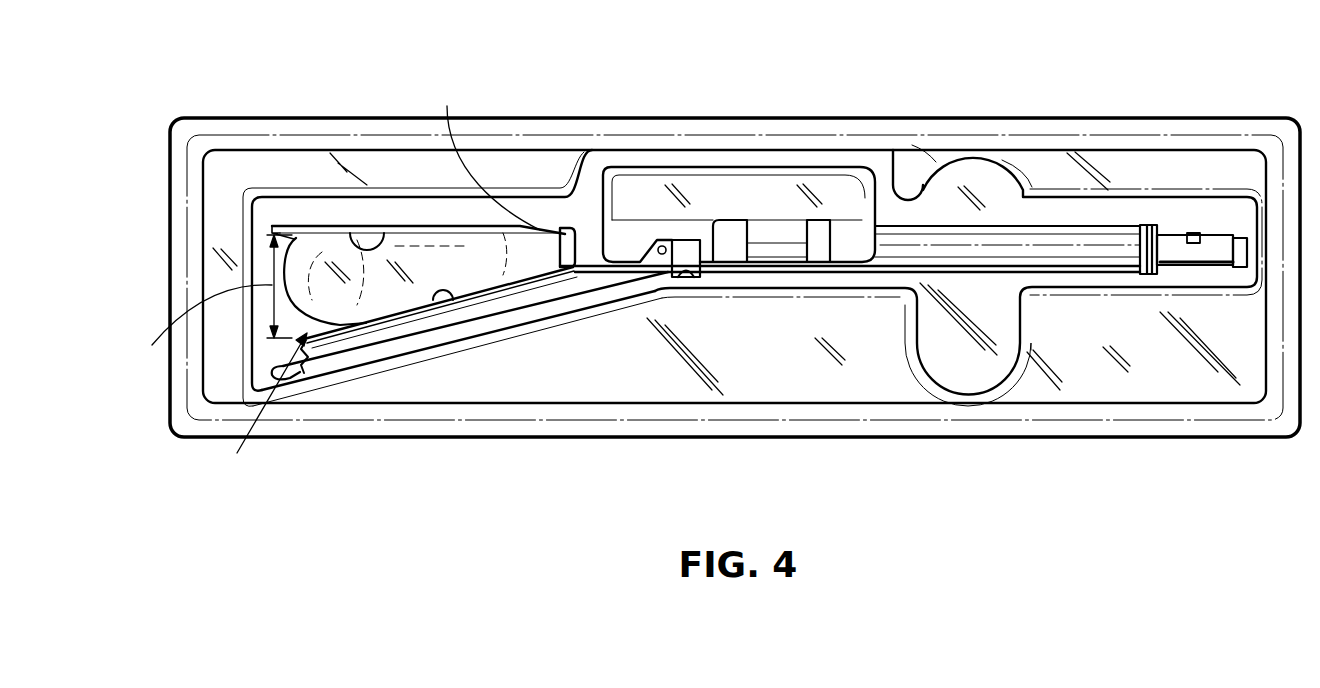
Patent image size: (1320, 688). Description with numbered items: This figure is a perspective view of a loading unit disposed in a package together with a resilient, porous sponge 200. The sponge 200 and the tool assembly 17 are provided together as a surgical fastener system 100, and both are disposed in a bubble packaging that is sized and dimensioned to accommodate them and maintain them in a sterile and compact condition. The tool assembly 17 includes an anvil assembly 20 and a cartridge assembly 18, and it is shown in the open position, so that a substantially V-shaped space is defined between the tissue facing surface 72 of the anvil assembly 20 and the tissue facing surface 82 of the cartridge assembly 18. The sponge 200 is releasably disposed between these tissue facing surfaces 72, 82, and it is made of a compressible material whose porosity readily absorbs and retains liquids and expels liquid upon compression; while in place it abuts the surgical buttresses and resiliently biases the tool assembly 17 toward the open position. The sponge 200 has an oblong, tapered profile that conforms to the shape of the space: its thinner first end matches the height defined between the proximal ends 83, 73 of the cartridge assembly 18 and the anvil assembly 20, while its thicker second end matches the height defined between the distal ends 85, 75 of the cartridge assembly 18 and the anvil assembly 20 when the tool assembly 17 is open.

The surgical fastener system 100 is at (636, 78).
The tool assembly 17 is at (890, 128).
The cartridge assembly 18 is at (291, 378).
The anvil assembly 20 is at (320, 221).
The tissue facing surface 72 is at (376, 230).
The proximal end 73 is at (562, 236).
The distal end 75 is at (305, 237).
The tissue facing surface 82 is at (437, 306).
The proximal end 83 is at (613, 284).
The distal end 85 is at (333, 369).
The sponge 200 is at (302, 236).